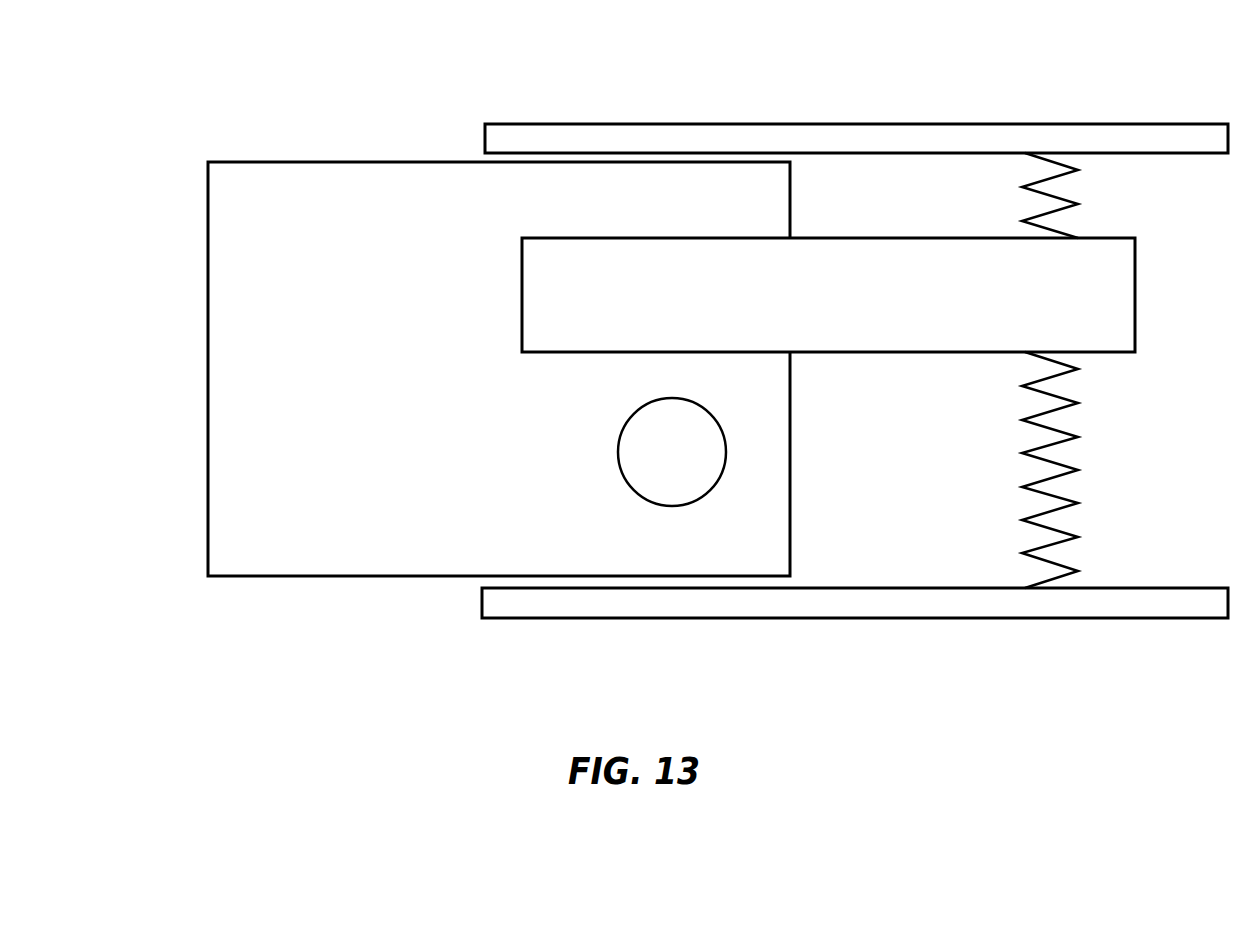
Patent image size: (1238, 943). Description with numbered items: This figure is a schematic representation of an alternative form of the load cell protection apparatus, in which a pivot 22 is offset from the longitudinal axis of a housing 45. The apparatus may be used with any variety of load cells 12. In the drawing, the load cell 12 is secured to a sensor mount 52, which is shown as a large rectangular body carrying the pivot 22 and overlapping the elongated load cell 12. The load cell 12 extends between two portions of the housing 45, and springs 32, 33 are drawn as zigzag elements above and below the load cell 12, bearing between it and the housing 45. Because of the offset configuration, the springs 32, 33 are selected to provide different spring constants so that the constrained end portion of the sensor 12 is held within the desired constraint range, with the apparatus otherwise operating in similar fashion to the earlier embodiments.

The load cell 12 is at (915, 307).
The pivot 22 is at (673, 483).
The spring 32 is at (1066, 198).
The spring 33 is at (1066, 466).
The housing 45 is at (892, 140).
The sensor mount 52 is at (225, 243).